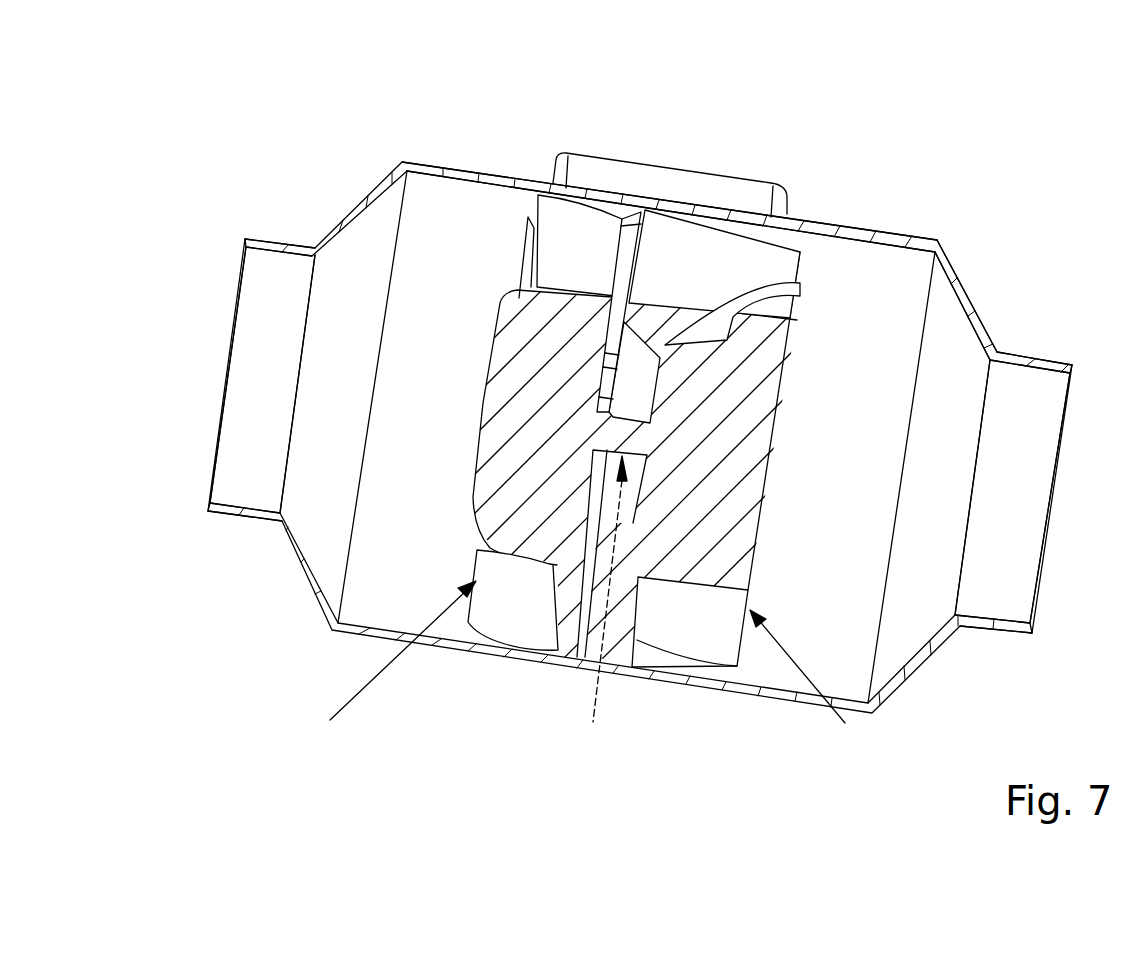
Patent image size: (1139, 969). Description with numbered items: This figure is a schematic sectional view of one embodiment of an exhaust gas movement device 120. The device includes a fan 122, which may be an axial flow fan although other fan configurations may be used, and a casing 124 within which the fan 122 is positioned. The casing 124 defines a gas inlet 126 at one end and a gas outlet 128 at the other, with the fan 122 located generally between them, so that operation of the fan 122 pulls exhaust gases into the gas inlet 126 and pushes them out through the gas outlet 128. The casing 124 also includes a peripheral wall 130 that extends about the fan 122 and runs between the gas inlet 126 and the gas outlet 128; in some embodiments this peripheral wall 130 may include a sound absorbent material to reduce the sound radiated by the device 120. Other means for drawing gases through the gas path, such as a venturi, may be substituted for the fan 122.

The gas movement device 120 is at (616, 400).
The fan 122 is at (513, 613).
The casing 124 is at (982, 308).
The gas inlet 126 is at (203, 473).
The gas outlet 128 is at (1038, 549).
The peripheral wall 130 is at (880, 236).